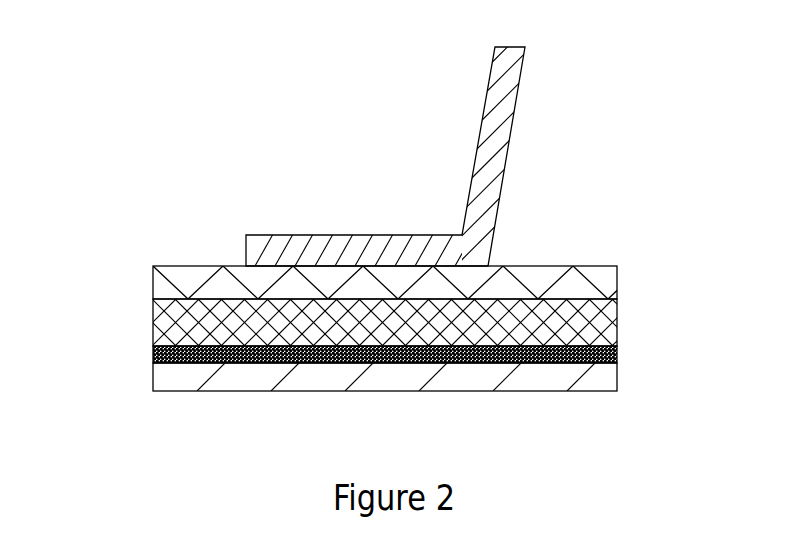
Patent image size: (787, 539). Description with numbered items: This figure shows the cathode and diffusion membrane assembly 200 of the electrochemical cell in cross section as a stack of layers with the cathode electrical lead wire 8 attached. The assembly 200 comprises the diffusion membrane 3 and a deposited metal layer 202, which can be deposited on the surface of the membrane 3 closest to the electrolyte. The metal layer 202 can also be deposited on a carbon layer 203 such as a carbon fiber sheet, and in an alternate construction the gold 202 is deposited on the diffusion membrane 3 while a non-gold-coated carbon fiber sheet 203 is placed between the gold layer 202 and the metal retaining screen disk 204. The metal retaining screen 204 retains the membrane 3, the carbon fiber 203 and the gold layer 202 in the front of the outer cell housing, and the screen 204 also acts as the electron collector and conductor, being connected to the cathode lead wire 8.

The cathode and diffusion membrane assembly 200 is at (301, 158).
The cathode electrical lead wire 8 is at (534, 119).
The metal retaining screen disk 204 is at (640, 271).
The carbon fiber sheet 203 is at (134, 295).
The deposited metal 202 is at (130, 345).
The diffusion membrane 3 is at (640, 366).